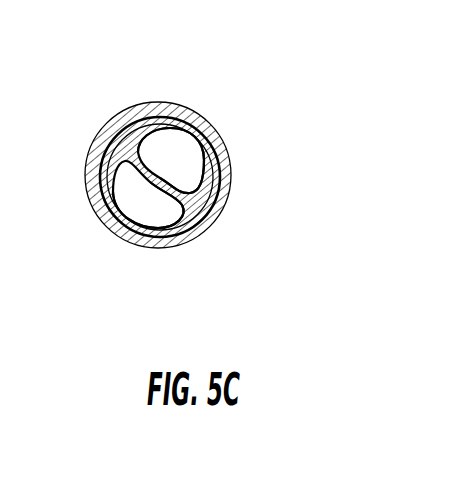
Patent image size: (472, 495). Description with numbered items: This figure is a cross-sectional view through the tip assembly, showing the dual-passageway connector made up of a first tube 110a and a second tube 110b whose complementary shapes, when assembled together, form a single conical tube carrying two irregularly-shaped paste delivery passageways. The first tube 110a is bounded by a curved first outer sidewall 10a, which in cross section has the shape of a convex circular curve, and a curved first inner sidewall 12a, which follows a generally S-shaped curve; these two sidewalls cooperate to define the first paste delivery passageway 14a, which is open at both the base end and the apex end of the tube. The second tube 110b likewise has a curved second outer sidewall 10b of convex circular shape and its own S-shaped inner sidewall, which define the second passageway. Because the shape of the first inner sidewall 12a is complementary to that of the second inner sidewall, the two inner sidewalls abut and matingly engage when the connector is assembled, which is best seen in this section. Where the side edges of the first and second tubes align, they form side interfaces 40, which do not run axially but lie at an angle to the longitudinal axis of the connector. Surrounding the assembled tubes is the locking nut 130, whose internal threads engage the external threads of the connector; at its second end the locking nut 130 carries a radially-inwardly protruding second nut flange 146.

The locking nut 130 is at (216, 204).
The side interfaces 40 is at (138, 118).
The first inner sidewall 12a is at (217, 149).
The first paste delivery passageway 14a is at (168, 130).
The first outer sidewall 10a is at (165, 148).
The first tube 110a is at (207, 153).
The second outer sidewall 10b is at (122, 233).
The second tube 110b is at (120, 212).
The second nut flange 146 is at (143, 203).